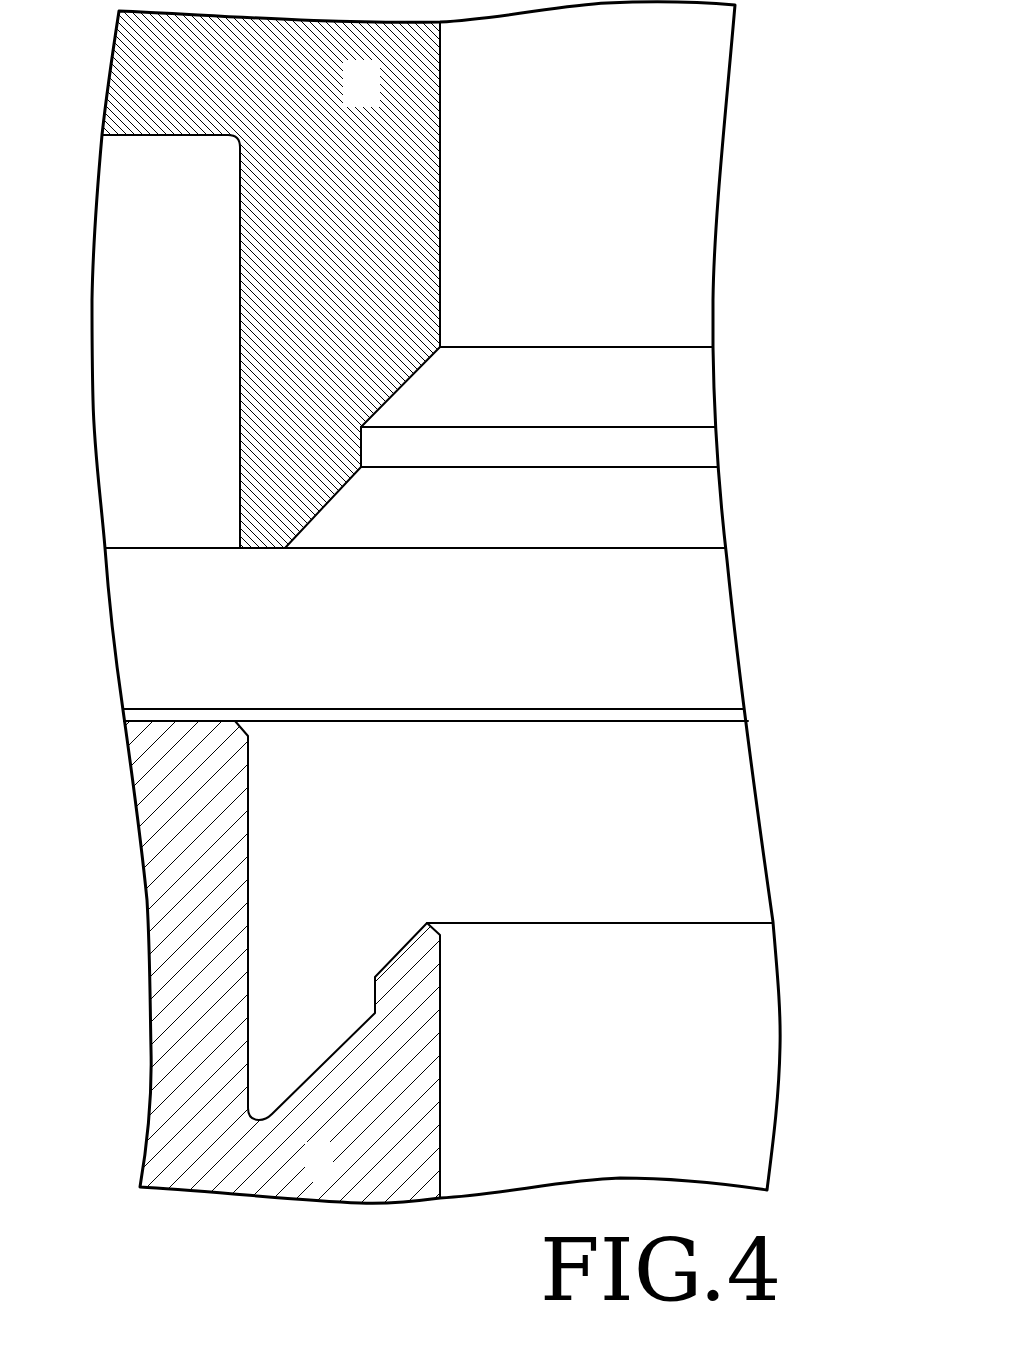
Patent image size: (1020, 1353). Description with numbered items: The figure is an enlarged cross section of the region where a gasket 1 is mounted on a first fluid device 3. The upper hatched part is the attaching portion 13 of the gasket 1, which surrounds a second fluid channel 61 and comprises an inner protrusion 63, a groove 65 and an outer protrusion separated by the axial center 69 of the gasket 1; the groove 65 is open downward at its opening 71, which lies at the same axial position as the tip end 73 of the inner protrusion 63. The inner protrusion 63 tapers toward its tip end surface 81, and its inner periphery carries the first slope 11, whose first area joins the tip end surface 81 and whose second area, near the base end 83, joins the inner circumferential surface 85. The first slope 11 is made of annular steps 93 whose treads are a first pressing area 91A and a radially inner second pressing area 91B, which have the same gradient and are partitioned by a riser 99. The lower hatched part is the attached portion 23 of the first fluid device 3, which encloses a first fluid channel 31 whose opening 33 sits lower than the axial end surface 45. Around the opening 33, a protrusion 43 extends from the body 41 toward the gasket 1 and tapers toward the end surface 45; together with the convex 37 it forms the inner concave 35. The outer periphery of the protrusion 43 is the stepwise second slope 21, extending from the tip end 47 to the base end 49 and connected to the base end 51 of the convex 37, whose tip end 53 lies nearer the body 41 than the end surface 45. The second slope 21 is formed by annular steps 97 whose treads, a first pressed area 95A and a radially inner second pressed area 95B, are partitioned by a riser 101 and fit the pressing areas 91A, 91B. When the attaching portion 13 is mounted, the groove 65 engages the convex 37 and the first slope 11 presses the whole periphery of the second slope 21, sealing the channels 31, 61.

The gasket 1 is at (371, 99).
The first fluid device 3 is at (331, 1178).
The first slope 11 is at (390, 414).
The attaching portion 13 is at (509, 566).
The second slope 21 is at (329, 1043).
The attached portion 23 is at (684, 694).
The first fluid channel 31 is at (671, 1102).
The opening 33 is at (645, 922).
The inner concave 35 is at (284, 957).
The convex 37 is at (262, 788).
The body 41 is at (418, 1182).
The protrusion 43 is at (420, 1020).
The axial end surface 45 is at (557, 707).
The tip end 47 is at (427, 922).
The base end 49 is at (378, 1123).
The base end of convex 51 is at (193, 1123).
The tip end of convex 53 is at (208, 720).
The second fluid channel 61 is at (652, 283).
The inner protrusion 63 is at (452, 337).
The groove 65 is at (176, 537).
The axial center 69 is at (172, 117).
The opening of groove 71 is at (200, 550).
The tip end of inner protrusion 73 is at (257, 528).
The tip end surface 81 is at (250, 550).
The base end of inner protrusion 83 is at (400, 135).
The inner circumferential surface 85 is at (442, 223).
The first pressing area 91A is at (313, 518).
The second pressing area 91B is at (403, 387).
The annular steps 93 is at (357, 492).
The first pressed area 95A is at (285, 1103).
The second pressed area 95B is at (395, 948).
The annular steps 97 is at (313, 1065).
The riser 99 is at (362, 454).
The riser 101 is at (373, 980).